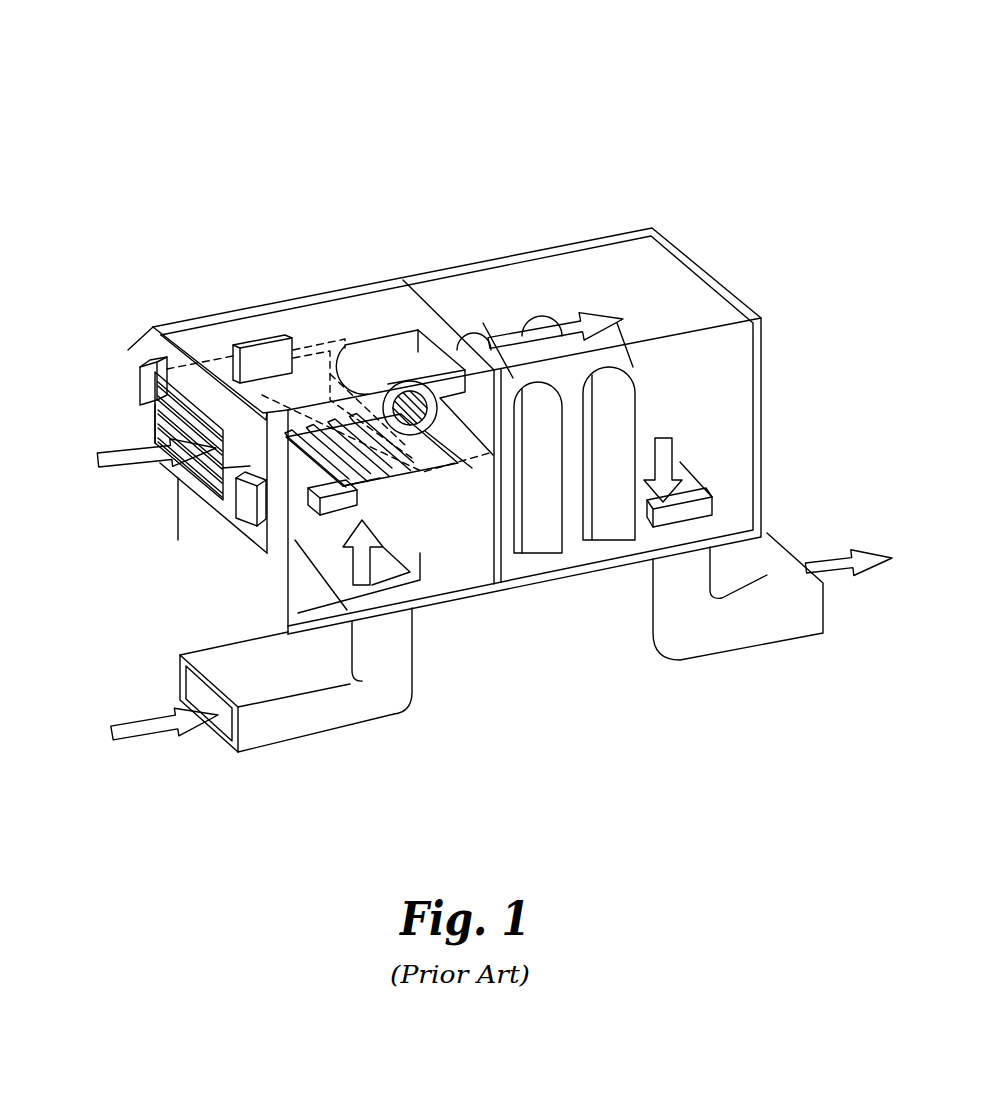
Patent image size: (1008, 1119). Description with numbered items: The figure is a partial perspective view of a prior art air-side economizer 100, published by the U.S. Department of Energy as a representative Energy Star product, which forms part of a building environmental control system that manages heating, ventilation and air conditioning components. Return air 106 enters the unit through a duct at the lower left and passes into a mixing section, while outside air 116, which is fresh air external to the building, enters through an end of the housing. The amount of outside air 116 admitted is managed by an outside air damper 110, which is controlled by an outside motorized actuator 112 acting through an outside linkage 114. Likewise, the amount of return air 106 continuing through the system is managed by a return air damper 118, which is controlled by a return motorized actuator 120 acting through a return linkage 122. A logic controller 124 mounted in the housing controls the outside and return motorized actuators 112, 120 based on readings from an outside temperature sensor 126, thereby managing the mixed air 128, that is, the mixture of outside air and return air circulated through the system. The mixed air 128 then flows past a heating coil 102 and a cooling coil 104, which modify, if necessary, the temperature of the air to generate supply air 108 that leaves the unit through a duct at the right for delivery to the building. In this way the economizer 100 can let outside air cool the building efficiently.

The air-side economizer 100 is at (238, 52).
The heating coil 102 is at (615, 420).
The cooling coil 104 is at (540, 517).
The return air 106 is at (148, 728).
The supply air 108 is at (833, 567).
The outside air damper 110 is at (200, 443).
The outside motorized actuator 112 is at (247, 508).
The outside linkage 114 is at (250, 466).
The outside air 116 is at (112, 465).
The return air damper 118 is at (353, 465).
The return motorized actuator 120 is at (330, 497).
The return linkage 122 is at (375, 485).
The logic controller 124 is at (258, 358).
The outside temperature sensor 126 is at (147, 372).
The mixed air 128 is at (545, 333).